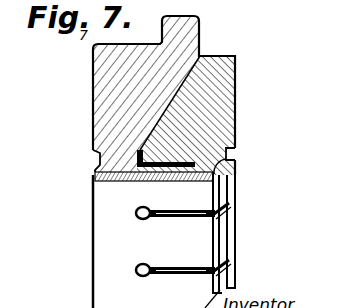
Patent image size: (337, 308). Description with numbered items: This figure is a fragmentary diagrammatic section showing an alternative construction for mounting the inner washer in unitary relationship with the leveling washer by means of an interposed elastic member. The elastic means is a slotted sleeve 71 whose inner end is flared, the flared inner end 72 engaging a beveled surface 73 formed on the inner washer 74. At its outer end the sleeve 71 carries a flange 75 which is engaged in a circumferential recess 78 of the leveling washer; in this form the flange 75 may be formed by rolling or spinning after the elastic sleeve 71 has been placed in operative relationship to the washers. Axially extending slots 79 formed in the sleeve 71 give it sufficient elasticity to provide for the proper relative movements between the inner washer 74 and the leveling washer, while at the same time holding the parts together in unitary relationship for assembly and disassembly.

The slotted sleeve 71 is at (98, 252).
The flared inner end 72 is at (230, 181).
The beveled surface 73 is at (217, 157).
The inner washer 74 is at (220, 110).
The flange 75 is at (96, 172).
The circumferential recess 78 is at (97, 153).
The axially extending slots 79 is at (200, 221).